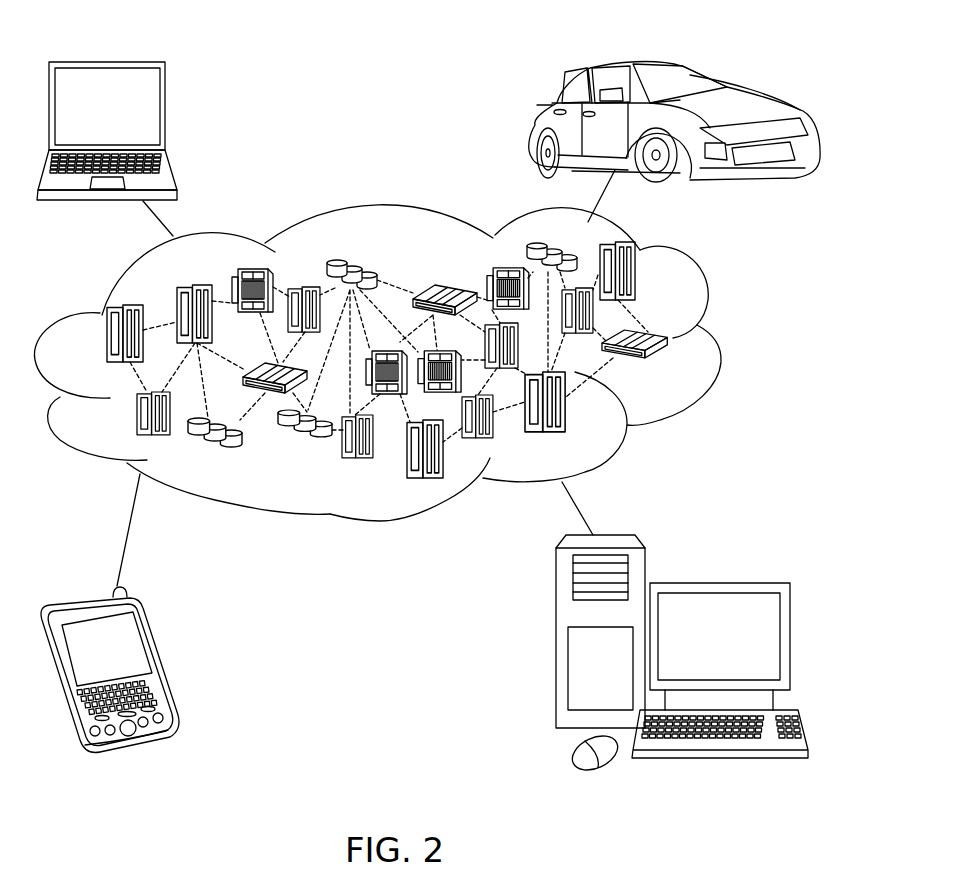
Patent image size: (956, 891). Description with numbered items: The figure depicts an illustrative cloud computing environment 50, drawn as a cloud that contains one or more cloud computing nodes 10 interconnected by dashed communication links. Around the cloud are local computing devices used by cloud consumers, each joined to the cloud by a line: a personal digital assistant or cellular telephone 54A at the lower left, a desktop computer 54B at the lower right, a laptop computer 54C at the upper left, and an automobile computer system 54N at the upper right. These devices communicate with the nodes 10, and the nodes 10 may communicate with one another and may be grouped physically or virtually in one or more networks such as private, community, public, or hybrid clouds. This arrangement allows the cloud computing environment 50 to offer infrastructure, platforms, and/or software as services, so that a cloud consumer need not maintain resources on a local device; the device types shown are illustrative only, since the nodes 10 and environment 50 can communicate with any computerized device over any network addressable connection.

The cloud computing nodes 10 is at (695, 383).
The cloud computing environment 50 is at (712, 340).
The personal digital assistant (PDA) or cellular telephone 54A is at (157, 665).
The desktop computer 54B is at (738, 583).
The laptop computer 54C is at (165, 106).
The automobile computer system 54N is at (532, 123).